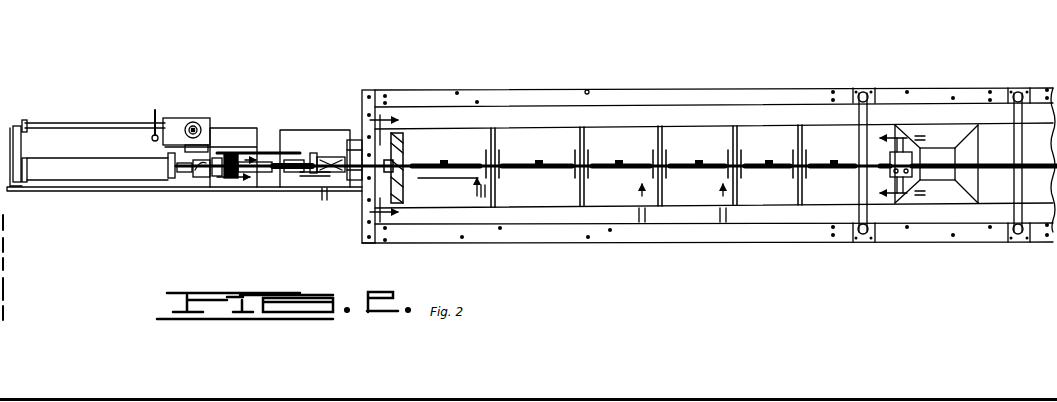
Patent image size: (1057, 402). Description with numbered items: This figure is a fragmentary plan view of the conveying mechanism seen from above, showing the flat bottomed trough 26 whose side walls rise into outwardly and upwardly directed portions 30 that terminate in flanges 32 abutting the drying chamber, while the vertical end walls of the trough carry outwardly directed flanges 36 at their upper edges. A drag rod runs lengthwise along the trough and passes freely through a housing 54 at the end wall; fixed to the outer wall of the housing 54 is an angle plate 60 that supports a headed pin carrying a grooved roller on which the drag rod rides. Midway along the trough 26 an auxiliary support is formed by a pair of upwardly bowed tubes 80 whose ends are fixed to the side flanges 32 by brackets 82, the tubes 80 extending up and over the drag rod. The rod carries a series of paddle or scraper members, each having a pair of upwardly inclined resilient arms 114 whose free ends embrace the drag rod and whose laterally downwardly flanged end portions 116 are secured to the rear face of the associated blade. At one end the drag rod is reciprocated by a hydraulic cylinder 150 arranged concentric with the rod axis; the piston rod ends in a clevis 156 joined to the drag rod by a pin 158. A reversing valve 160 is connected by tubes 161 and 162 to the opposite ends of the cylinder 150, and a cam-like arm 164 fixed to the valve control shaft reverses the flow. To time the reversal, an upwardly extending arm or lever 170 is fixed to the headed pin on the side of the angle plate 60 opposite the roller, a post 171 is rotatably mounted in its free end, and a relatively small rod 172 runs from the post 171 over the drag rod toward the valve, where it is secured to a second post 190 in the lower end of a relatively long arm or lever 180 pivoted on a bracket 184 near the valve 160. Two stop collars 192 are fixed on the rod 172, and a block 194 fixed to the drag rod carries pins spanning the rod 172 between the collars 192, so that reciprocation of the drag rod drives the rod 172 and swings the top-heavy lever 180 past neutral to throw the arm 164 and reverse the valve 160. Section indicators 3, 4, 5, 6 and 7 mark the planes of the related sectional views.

The trough 26 is at (775, 205).
The outwardly and upwardly directed portions 30 is at (572, 103).
The flanges 32 is at (548, 90).
The outwardly directed flanges 36 is at (365, 233).
The housing 54 is at (350, 140).
The angle plate 60 is at (352, 140).
The upwardly bowed tubes 80 is at (858, 136).
The brackets 82 is at (863, 90).
The resilient arms 114 is at (512, 163).
The flanged end portions 116 is at (485, 140).
The cylinder 150 is at (73, 191).
The clevis 156 is at (198, 178).
The pin 158 is at (206, 177).
The reversing valve 160 is at (178, 118).
The tube 161 is at (82, 100).
The tube 162 is at (168, 152).
The cam-like arm 164 is at (215, 150).
The arm or lever 170 is at (325, 155).
The post 171 is at (305, 162).
The rod 172 is at (305, 190).
The arm or lever 180 is at (283, 150).
The bracket 184 is at (232, 154).
The second post 190 is at (190, 173).
The stop collars 192 is at (228, 178).
The block 194 is at (268, 151).
The section line 3- 3 is at (403, 195).
The section line 4- 4 is at (246, 180).
The section line 5- 5 is at (929, 164).
The section line 6- 6 is at (391, 168).
The section line 7- 7 is at (665, 203).